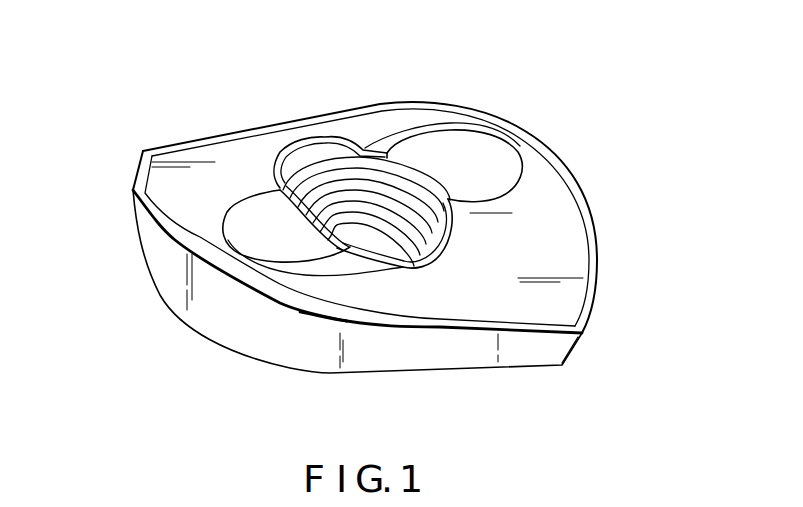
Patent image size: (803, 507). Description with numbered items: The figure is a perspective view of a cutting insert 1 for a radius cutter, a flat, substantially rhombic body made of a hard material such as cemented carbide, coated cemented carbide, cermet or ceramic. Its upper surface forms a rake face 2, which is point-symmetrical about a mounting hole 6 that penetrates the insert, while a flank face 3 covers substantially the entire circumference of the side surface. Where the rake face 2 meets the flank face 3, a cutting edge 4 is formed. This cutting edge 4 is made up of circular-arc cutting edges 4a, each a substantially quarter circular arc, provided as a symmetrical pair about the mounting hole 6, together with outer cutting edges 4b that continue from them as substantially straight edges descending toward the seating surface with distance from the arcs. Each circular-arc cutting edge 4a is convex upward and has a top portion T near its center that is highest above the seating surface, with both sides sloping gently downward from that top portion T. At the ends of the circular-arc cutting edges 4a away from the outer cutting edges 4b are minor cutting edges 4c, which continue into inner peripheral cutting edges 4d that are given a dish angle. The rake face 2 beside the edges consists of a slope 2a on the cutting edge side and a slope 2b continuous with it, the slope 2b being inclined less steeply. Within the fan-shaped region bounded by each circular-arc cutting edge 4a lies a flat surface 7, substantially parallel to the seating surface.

The cutting insert 1 is at (541, 87).
The rake face 2 is at (453, 118).
The slope 2a is at (320, 312).
The slope 2b is at (347, 297).
The flank face 3 is at (287, 343).
The cutting edge 4 is at (588, 186).
The circular-arc cutting edge 4a is at (556, 152).
The outer cutting edge 4b is at (326, 112).
The minor cutting edge 4c is at (600, 252).
The inner peripheral cutting edge 4d is at (584, 308).
The mounting hole 6 is at (362, 232).
The flat surface 7 is at (262, 205).
The top portion T is at (530, 127).